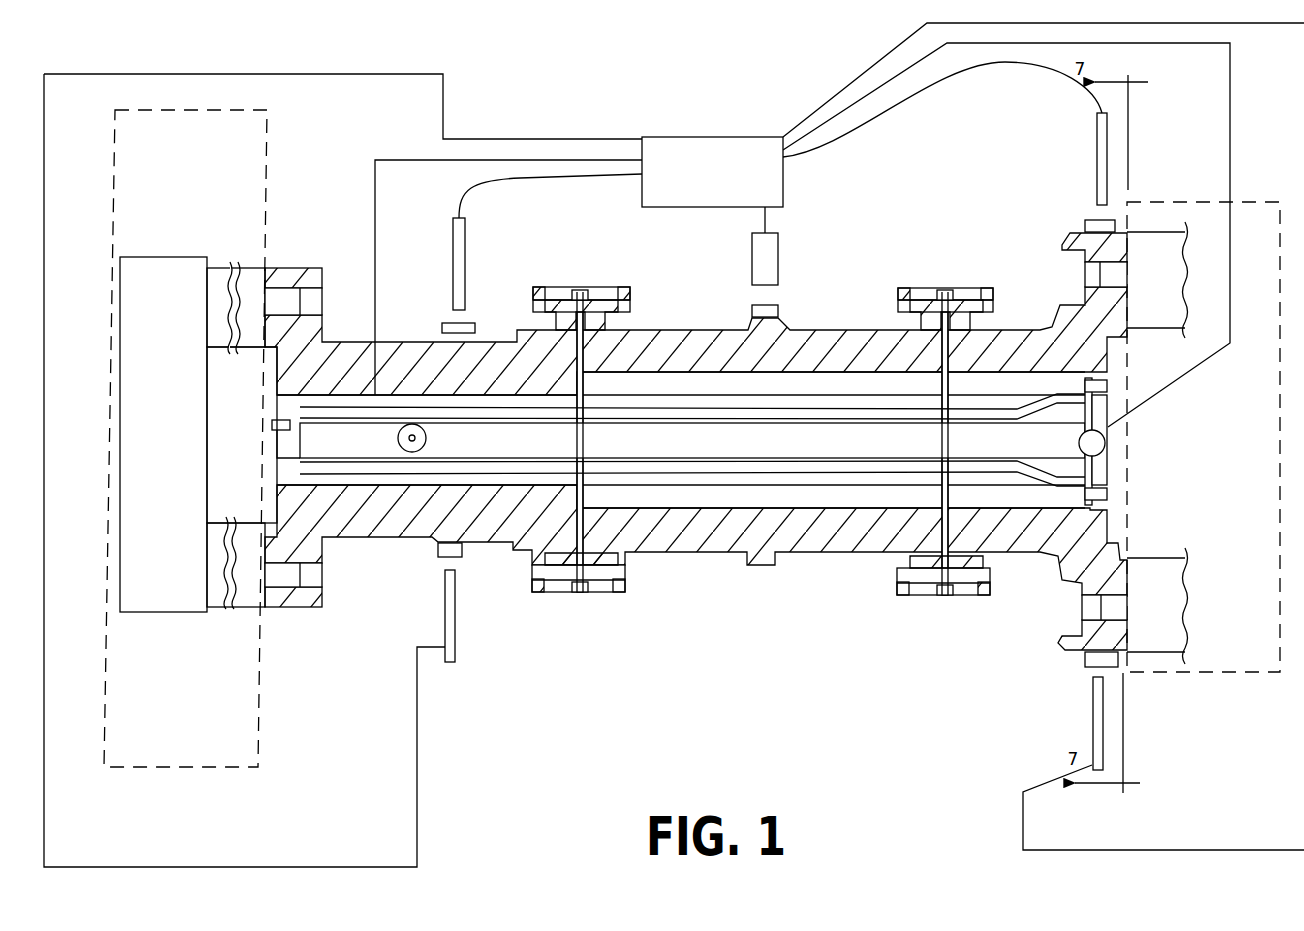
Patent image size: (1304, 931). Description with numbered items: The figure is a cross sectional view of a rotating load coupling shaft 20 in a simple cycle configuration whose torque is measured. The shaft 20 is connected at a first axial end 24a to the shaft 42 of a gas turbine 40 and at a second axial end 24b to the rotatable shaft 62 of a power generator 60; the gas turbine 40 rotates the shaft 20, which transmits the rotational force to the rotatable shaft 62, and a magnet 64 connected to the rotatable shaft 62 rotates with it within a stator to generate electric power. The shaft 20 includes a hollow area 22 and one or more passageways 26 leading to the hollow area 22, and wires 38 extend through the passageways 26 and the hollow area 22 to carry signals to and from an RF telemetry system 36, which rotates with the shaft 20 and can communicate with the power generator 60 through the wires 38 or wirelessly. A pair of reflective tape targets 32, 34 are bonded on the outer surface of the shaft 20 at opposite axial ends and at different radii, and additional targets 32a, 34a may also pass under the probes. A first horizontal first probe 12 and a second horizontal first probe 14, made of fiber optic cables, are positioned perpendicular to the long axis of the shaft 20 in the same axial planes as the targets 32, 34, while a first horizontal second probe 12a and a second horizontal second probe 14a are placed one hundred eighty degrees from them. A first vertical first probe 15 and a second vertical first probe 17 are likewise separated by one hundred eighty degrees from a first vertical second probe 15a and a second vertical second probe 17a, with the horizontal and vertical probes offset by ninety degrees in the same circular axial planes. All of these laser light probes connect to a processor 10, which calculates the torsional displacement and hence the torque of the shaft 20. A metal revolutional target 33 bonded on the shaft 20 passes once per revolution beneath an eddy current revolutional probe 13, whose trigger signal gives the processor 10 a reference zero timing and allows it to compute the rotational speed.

The processor 10 is at (718, 136).
The first horizontal first probe 12 is at (452, 243).
The first horizontal second probe 12a is at (455, 640).
The revolutional probe 13 is at (778, 246).
The second horizontal first probe 14 is at (1097, 168).
The second horizontal second probe 14a is at (1092, 720).
The first vertical first probe 15 is at (678, 523).
The first vertical second probe 15a is at (385, 395).
The second vertical first probe 17 is at (1042, 522).
The second vertical second probe 17a is at (1093, 441).
The shaft 20 is at (808, 545).
The hollow area 22 is at (980, 498).
The first axial end 24a is at (1062, 245).
The second axial end 24b is at (292, 268).
The passageway 26 is at (628, 558).
The target 32 is at (465, 325).
The target 32a is at (440, 556).
The revolutional target 33 is at (785, 305).
The target 34 is at (1092, 220).
The target 34a is at (1090, 668).
The RF telemetry system 36 is at (597, 595).
The wires 38 is at (553, 522).
The gas turbine 40 is at (1172, 674).
The shaft 42 is at (1138, 655).
The power generator 60 is at (178, 767).
The rotatable shaft 62 is at (247, 605).
The magnet 64 is at (148, 605).